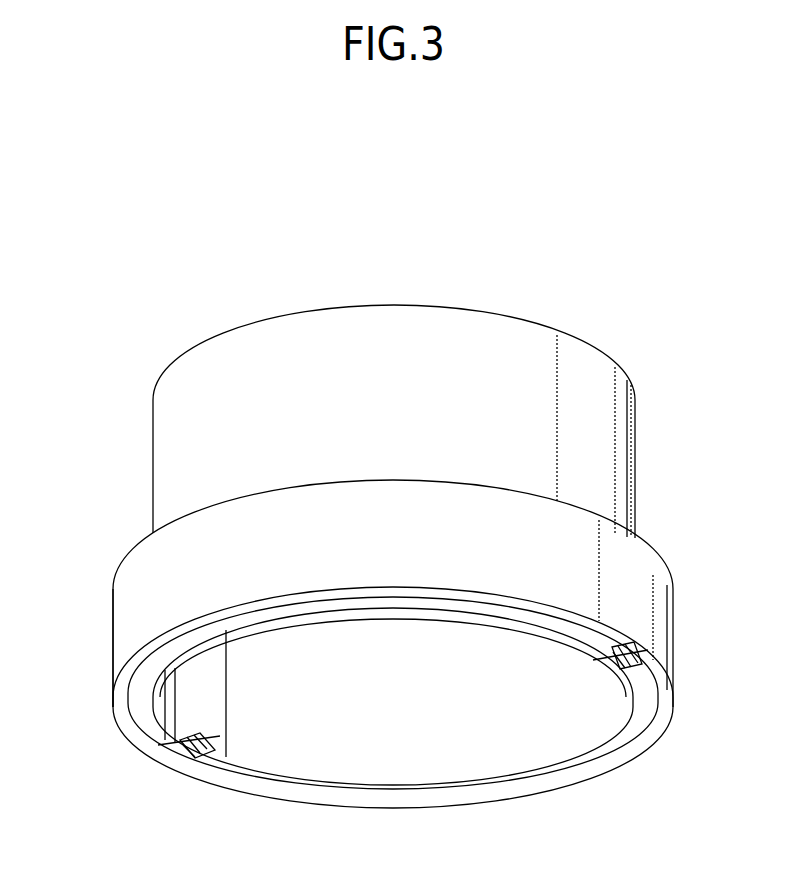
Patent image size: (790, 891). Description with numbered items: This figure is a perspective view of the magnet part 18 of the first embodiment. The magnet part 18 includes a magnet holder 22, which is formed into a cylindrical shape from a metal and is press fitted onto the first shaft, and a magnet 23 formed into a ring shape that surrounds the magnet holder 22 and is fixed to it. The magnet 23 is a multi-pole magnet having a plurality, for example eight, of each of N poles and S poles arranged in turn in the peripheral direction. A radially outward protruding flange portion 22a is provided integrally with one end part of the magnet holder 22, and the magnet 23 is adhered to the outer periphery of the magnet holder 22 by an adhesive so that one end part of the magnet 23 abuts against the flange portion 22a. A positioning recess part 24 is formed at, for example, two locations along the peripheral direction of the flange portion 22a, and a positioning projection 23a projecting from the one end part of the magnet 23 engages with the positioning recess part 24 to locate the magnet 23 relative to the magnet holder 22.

The magnet part 18 is at (142, 413).
The magnet holder 22 is at (297, 337).
The flange portion 22a is at (298, 612).
The magnet 23 is at (417, 500).
The positioning projection 23a is at (217, 748).
The positioning recess part 24 is at (190, 770).